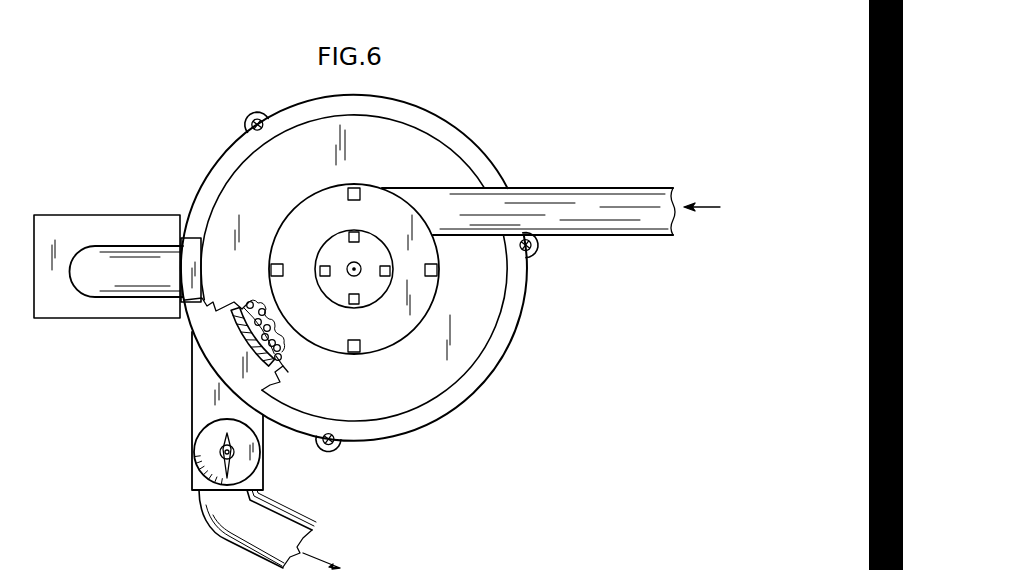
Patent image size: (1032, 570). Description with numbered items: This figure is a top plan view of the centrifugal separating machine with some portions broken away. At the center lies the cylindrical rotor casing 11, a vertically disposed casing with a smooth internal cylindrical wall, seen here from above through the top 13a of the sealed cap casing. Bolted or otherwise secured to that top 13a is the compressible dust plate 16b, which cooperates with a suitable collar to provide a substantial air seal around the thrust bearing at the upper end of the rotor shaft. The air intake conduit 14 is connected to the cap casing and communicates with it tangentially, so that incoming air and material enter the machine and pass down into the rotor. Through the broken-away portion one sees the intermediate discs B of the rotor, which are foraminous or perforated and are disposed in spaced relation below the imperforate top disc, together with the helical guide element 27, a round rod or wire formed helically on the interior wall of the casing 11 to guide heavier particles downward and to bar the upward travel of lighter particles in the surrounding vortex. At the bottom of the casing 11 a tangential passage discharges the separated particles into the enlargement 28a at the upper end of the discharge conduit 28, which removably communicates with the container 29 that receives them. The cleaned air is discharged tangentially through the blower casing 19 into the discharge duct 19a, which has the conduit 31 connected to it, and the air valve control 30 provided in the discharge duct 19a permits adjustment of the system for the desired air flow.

The blower casing 19 is at (465, 132).
The discharge duct 19a is at (197, 390).
The top of the cap member 13a is at (322, 197).
The compressible dust plate 16b is at (335, 247).
The air intake conduit 14 is at (568, 200).
The container 29 is at (76, 318).
The discharge conduit 28 is at (150, 282).
The enlargement 28a is at (187, 240).
The rotor casing 11 is at (238, 326).
The intermediate discs B is at (273, 340).
The helical guide element 27 is at (298, 367).
The air valve control 30 is at (218, 449).
The conduit 31 is at (265, 520).